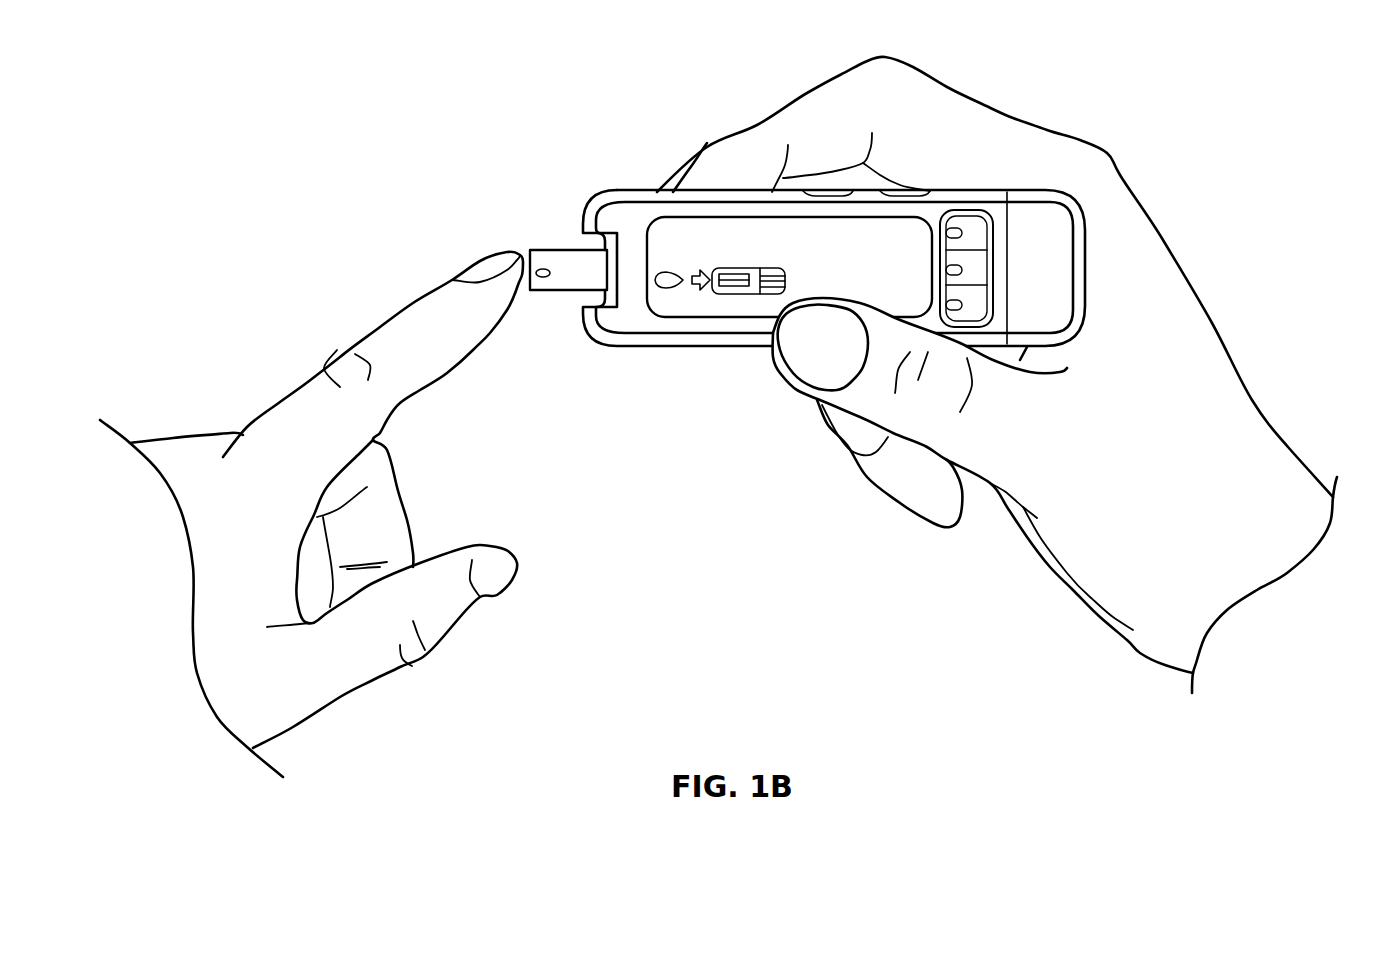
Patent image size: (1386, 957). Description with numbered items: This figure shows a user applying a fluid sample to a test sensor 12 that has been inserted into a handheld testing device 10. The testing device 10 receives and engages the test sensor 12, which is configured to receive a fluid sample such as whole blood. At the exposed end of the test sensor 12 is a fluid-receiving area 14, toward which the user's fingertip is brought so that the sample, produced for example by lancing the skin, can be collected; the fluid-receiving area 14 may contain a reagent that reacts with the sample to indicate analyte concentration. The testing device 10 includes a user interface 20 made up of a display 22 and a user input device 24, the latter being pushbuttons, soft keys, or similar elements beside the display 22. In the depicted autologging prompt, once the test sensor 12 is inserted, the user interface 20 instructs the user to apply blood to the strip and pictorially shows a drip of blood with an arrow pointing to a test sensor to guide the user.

The testing device 10 is at (659, 350).
The test sensor 12 is at (548, 238).
The fluid-receiving area 14 is at (540, 288).
The user interface 20 is at (811, 216).
The display 22 is at (743, 307).
The user input device 24 is at (968, 228).